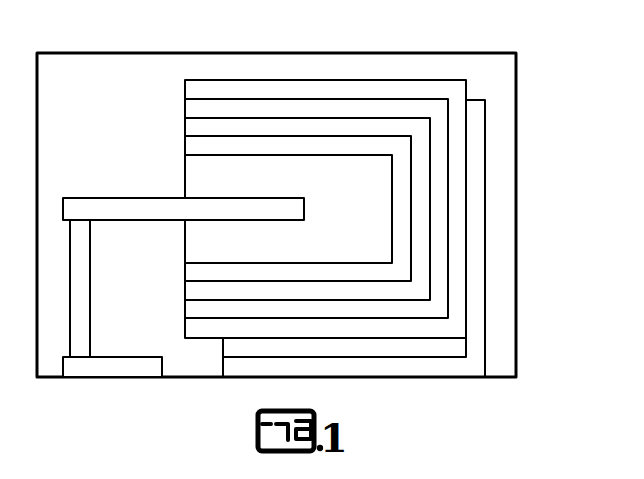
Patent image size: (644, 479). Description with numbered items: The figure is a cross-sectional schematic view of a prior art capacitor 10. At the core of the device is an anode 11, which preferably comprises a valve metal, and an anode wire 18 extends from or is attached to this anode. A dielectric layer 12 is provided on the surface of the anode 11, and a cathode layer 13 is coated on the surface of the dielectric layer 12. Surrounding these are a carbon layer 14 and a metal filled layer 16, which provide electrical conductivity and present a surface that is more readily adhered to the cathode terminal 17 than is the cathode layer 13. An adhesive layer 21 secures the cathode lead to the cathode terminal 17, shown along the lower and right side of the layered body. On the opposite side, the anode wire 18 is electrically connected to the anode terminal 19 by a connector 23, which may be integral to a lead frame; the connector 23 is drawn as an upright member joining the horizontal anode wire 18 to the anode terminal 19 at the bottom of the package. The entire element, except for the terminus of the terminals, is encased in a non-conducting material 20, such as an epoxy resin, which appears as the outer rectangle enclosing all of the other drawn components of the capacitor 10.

The capacitor 10 is at (307, 203).
The anode 11 is at (213, 173).
The dielectric layer 12 is at (227, 147).
The cathode layer 13 is at (258, 127).
The carbon layer 14 is at (298, 108).
The metal filled layer 16 is at (457, 258).
The cathode terminal 17 is at (477, 300).
The anode wire 18 is at (78, 197).
The anode terminal 19 is at (80, 380).
The non-conducting material 20 is at (92, 92).
The adhesive layer 21 is at (453, 349).
The connector 23 is at (75, 268).